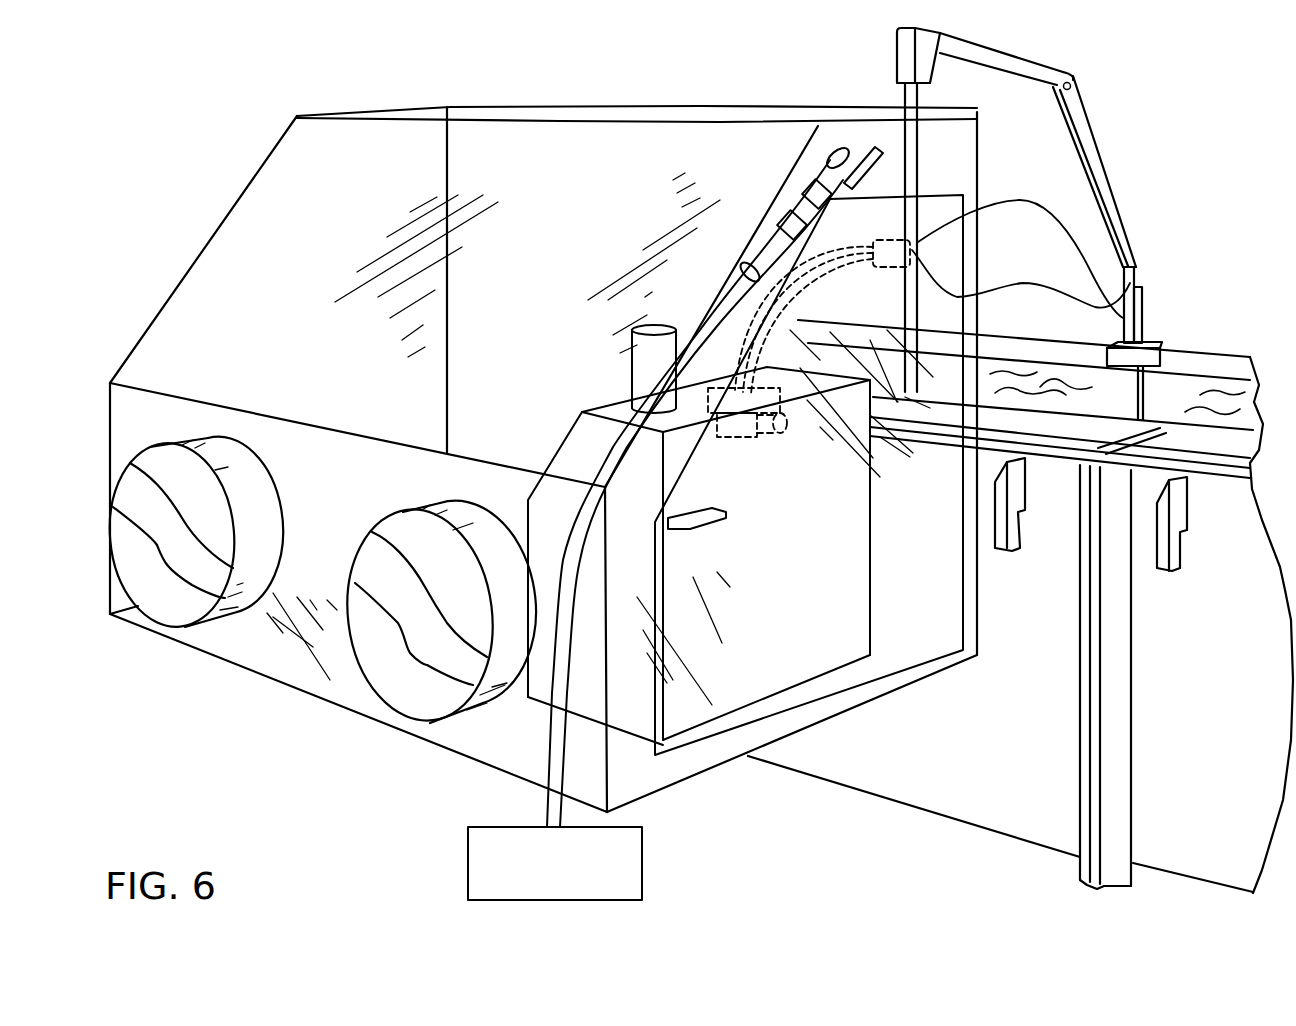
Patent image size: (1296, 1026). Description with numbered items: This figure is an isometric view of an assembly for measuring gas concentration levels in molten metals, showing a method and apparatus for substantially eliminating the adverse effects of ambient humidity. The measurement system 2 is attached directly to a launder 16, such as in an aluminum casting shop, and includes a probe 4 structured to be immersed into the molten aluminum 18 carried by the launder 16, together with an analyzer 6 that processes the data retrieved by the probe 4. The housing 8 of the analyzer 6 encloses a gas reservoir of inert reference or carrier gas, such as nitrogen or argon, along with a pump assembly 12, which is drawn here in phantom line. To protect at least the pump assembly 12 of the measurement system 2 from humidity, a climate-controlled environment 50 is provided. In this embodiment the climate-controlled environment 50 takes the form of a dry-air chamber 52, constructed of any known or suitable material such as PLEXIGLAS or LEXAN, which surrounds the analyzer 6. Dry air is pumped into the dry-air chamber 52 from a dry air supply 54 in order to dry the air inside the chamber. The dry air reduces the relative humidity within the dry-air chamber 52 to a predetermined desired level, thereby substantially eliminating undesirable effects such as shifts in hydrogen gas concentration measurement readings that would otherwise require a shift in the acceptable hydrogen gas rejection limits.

The measurement system 2 is at (539, 459).
The probe 4 is at (1165, 355).
The analyzer 6 is at (549, 437).
The housing 8 is at (642, 515).
The pump assembly 12 is at (741, 443).
The launder 16 is at (1018, 358).
The molten aluminum 18 is at (1203, 357).
The climate-controlled environment 50 is at (816, 744).
The dry-air chamber 52 is at (883, 310).
The dry air supply 54 is at (468, 872).